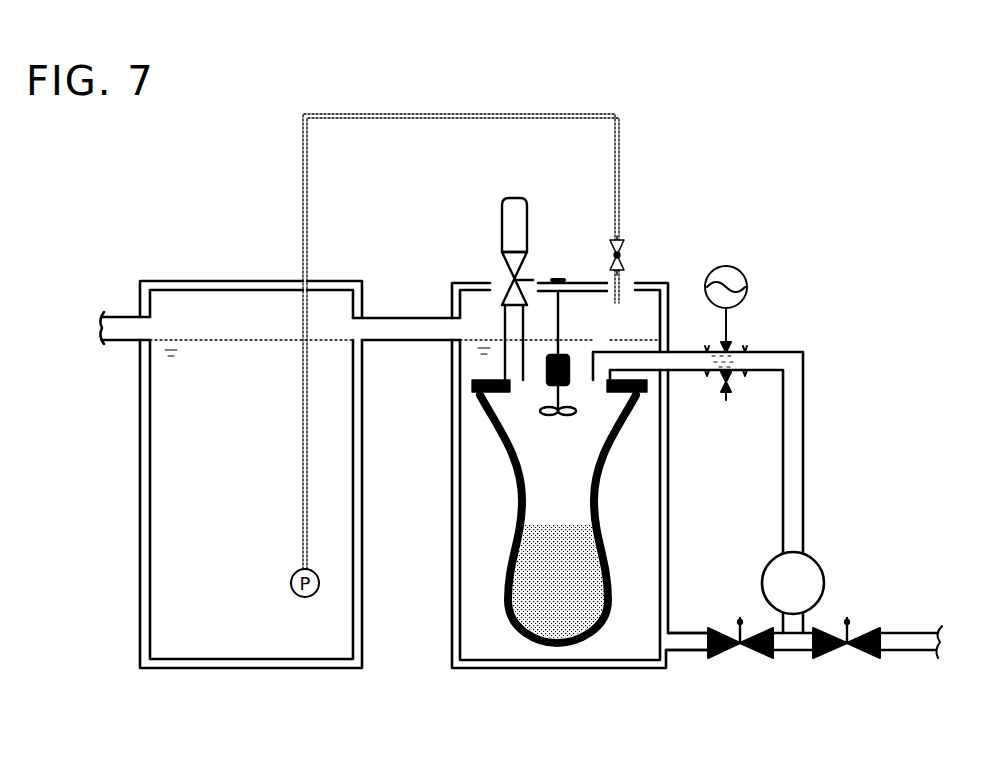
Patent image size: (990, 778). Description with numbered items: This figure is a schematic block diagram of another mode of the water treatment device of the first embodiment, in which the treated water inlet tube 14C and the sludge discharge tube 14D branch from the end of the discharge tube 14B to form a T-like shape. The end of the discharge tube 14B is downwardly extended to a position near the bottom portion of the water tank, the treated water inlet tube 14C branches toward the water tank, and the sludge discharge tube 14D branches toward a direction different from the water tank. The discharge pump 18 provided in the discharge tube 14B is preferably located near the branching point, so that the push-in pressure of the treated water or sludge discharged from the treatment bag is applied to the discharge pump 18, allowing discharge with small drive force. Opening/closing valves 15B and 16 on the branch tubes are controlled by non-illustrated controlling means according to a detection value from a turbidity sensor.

The discharge tube 14B is at (803, 436).
The treated water inlet tube 14C is at (685, 653).
The sludge discharge tube 14D is at (907, 657).
The opening/closing valve 15B is at (727, 628).
The opening/closing valve 16 is at (862, 628).
The discharge pump 18 is at (818, 557).